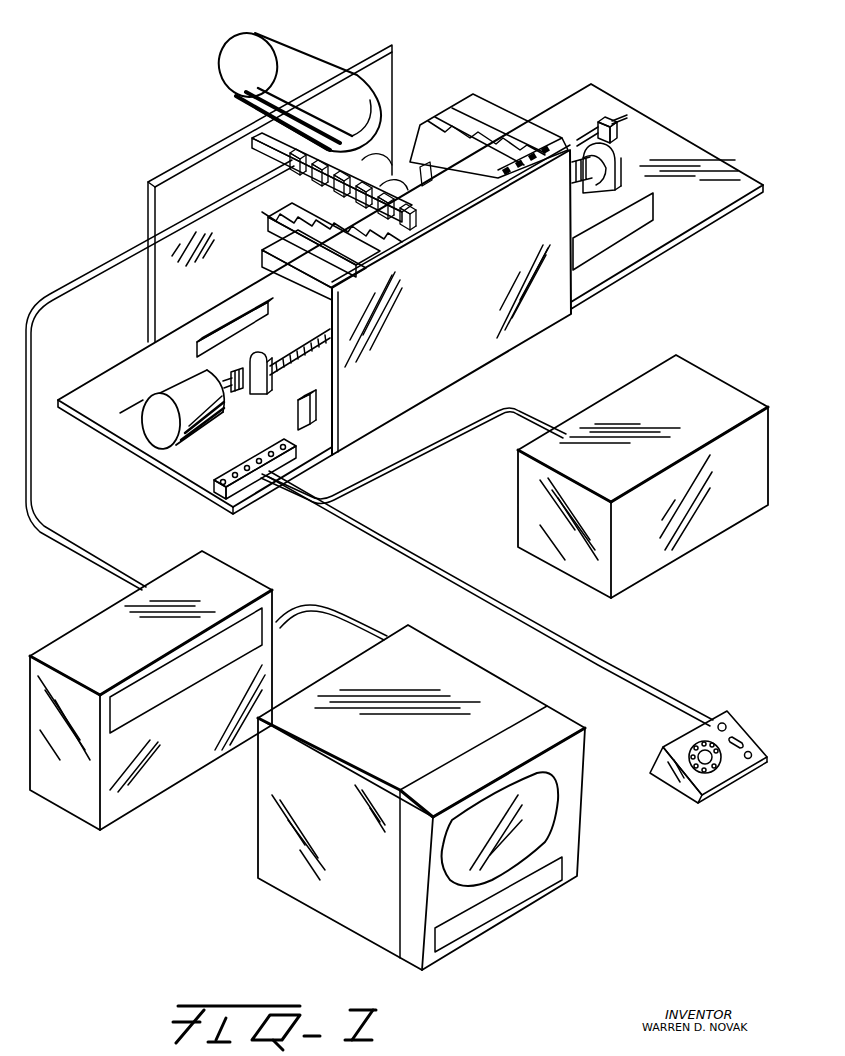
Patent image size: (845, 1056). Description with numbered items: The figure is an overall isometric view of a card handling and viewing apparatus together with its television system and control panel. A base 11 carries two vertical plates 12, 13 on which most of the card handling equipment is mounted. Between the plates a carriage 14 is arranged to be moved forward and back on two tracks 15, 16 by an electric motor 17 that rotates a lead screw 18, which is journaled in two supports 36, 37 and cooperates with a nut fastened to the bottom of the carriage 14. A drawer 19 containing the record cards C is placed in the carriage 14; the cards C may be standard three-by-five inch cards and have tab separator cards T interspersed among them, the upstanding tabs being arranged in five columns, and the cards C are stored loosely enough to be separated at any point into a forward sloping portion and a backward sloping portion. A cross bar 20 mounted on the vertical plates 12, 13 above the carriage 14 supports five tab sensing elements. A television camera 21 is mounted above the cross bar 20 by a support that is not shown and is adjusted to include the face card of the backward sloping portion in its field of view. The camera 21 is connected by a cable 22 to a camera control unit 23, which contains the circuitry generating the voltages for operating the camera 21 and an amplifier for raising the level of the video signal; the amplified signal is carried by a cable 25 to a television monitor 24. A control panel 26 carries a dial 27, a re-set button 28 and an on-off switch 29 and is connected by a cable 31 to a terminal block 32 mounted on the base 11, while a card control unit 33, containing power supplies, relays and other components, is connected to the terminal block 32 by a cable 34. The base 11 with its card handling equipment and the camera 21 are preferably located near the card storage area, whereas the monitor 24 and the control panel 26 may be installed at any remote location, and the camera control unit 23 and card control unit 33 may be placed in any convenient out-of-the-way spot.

The base 11 is at (658, 256).
The vertical plate 12 is at (393, 79).
The vertical plate 13 is at (528, 333).
The carriage 14 is at (262, 262).
The track 15 is at (196, 354).
The track 16 is at (298, 414).
The electric motor 17 is at (172, 388).
The lead screw 18 is at (286, 353).
The drawer 19 is at (263, 240).
The cross bar 20 is at (271, 142).
The television camera 21 is at (226, 66).
The cable 22 is at (100, 258).
The camera control unit 23 is at (64, 634).
The television monitor 24 is at (258, 833).
The cable 25 is at (348, 614).
The control panel 26 is at (668, 790).
The dial 27 is at (690, 745).
The re-set button 28 is at (750, 760).
The on-off switch 29 is at (742, 740).
The cable 31 is at (404, 534).
The terminal block 32 is at (262, 447).
The card control unit 33 is at (518, 487).
The cable 34 is at (396, 471).
The support 36 is at (266, 386).
The support 37 is at (604, 158).
The record cards C is at (483, 113).
The tab separator cards T is at (273, 210).